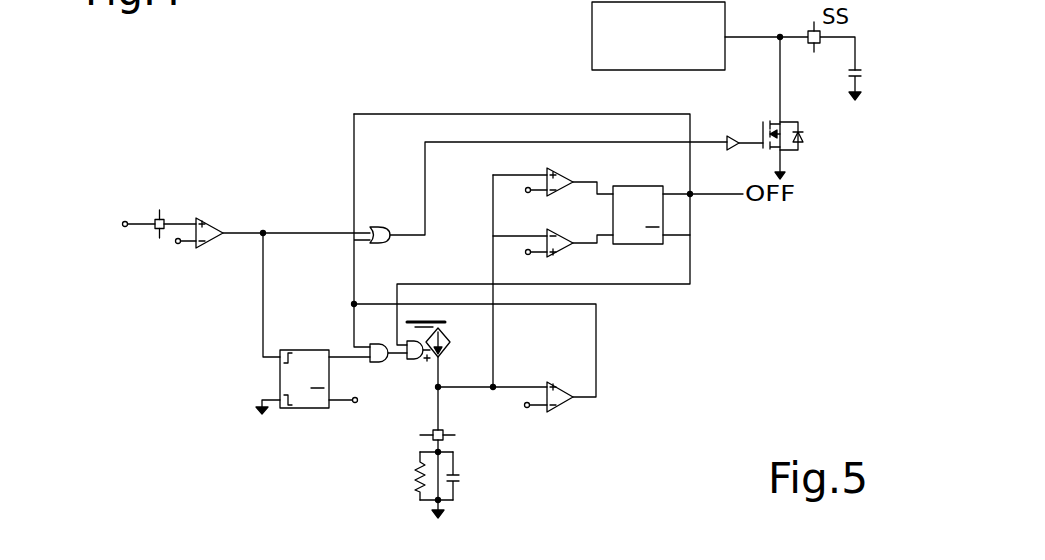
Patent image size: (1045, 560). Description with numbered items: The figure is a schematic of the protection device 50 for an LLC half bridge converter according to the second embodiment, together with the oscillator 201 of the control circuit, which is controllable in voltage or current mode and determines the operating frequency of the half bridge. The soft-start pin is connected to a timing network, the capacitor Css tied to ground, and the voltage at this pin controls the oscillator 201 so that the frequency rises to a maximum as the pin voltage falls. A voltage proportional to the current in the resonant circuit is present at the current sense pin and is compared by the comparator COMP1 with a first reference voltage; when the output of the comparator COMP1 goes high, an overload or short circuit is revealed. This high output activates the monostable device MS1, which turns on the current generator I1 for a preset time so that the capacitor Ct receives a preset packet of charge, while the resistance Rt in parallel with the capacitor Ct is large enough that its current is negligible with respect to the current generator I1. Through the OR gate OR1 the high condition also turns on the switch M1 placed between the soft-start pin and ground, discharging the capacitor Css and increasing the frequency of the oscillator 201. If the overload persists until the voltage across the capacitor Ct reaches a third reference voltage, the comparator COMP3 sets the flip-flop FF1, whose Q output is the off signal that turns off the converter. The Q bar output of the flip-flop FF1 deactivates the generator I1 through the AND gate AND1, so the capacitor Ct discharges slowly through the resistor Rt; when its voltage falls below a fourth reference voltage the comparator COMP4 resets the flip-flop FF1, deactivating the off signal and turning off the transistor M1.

The protection device 50 is at (303, 131).
The oscillator 201 is at (676, 50).
The switch M1 is at (765, 108).
The flip-flop FF1 is at (642, 203).
The monostable device MS1 is at (305, 367).
The OR gate OR1 is at (382, 223).
The AND gate AND1 is at (380, 364).
The comparator COMP1 is at (207, 235).
The comparator COMP3 is at (546, 183).
The comparator COMP4 is at (574, 257).
The current generator I1 is at (439, 341).
The resistance Rt is at (402, 476).
The capacitor Ct is at (468, 476).
The capacitor Css is at (877, 81).